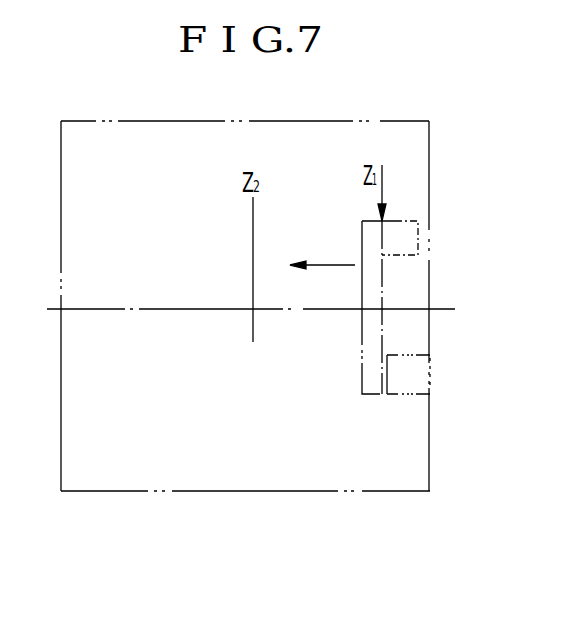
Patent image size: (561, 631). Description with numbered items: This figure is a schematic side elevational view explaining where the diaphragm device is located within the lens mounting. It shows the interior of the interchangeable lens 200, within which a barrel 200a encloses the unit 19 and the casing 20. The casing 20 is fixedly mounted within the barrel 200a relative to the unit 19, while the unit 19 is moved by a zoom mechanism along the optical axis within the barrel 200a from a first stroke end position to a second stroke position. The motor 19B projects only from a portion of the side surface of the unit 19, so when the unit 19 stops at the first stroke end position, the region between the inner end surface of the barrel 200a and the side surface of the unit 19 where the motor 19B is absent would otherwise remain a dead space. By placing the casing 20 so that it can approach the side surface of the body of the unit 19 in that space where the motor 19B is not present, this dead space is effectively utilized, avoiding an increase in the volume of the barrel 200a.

The interchangeable lens 200 is at (255, 276).
The barrel 200a is at (179, 118).
The unit 19 is at (415, 273).
The motor 19B is at (410, 218).
The casing 20 is at (397, 401).